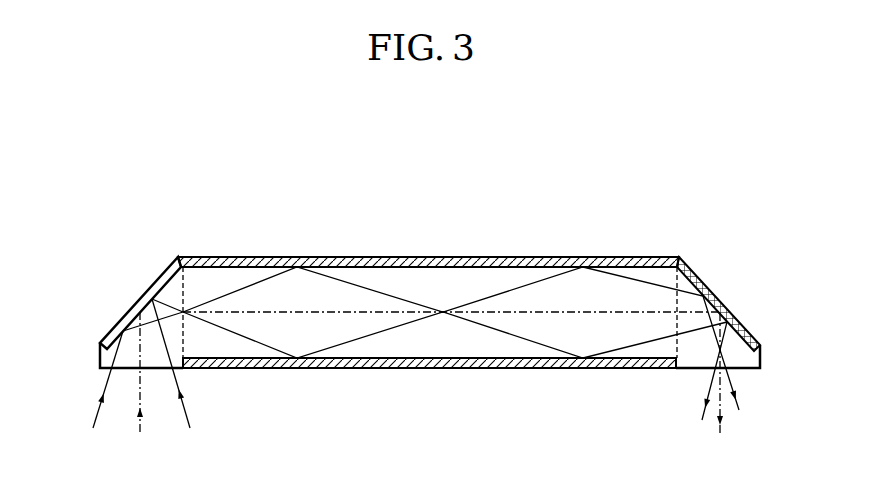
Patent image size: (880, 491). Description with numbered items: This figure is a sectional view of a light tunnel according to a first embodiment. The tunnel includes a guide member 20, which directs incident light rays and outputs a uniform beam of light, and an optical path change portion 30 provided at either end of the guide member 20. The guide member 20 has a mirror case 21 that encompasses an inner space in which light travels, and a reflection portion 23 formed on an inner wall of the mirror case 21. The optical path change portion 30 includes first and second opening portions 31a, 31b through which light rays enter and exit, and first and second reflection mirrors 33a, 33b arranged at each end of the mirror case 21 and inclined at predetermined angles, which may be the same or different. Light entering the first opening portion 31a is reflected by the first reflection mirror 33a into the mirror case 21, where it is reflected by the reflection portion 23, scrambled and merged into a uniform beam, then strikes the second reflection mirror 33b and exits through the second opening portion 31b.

The guide member 20 is at (410, 242).
The mirror case 21 is at (543, 257).
The reflection portion 23 is at (255, 267).
The optical path change portion 30 is at (178, 253).
The first opening portion 31a is at (176, 361).
The second opening portion 31b is at (742, 362).
The first reflection mirror 33a is at (121, 331).
The second reflection mirror 33b is at (742, 342).